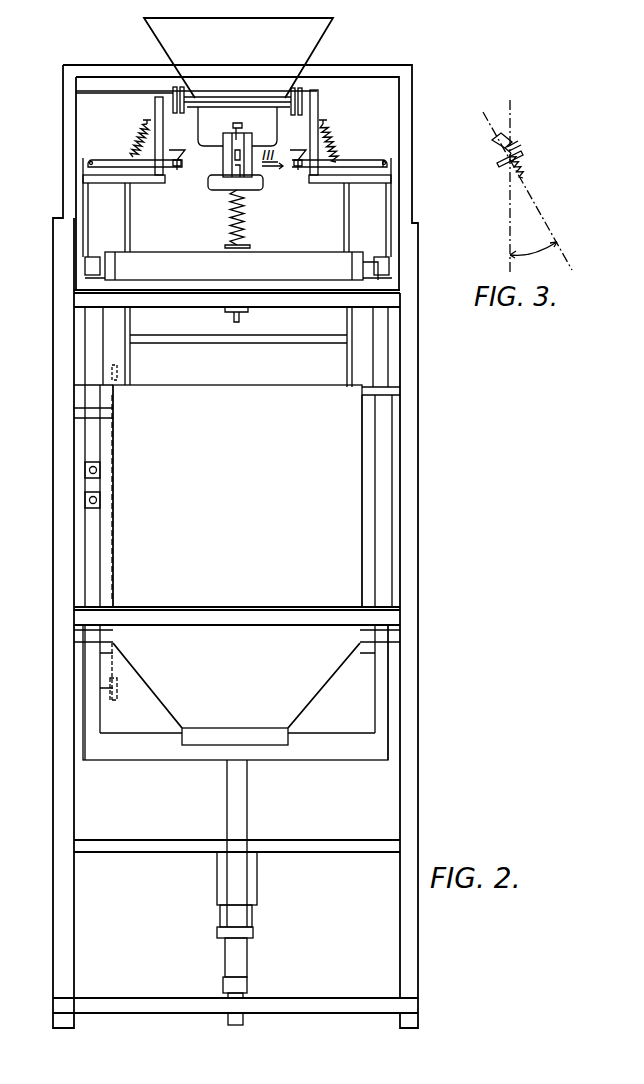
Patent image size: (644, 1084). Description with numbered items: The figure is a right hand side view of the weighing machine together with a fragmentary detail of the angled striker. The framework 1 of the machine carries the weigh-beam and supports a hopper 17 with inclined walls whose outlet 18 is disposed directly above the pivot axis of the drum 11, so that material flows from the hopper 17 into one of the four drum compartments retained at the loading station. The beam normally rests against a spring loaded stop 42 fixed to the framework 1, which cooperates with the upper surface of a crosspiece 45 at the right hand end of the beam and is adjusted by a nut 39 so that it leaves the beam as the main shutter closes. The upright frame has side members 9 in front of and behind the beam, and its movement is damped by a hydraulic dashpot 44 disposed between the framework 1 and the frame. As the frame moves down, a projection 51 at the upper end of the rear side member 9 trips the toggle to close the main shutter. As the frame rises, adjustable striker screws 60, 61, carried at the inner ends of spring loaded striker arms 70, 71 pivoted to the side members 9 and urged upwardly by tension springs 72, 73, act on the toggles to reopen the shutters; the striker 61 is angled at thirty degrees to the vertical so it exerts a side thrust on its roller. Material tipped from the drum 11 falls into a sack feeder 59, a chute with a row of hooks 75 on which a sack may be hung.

In FIG. 2, the framework 1 is at (407, 790).
In FIG. 2, the side members 9 is at (92, 517).
In FIG. 2, the drum 11 is at (243, 373).
In FIG. 2, the hopper 17 is at (238, 49).
In FIG. 2, the outlet 18 is at (262, 100).
In FIG. 2, the nut 39 is at (232, 173).
In FIG. 2, the spring loaded stop 42 is at (228, 242).
In FIG. 2, the hydraulic dashpot 44 is at (250, 885).
In FIG. 2, the crosspiece 45 is at (293, 260).
In FIG. 2, the projection 51 is at (310, 90).
In FIG. 2, the sack feeder 59 is at (243, 506).
In FIG. 2, the striker screw 60 is at (177, 150).
In FIG. 2, the striker screw 61 is at (298, 150).
In FIG. 3, the striker screw 61 is at (510, 140).
In FIG. 2, the striker arm 70 is at (110, 160).
In FIG. 2, the striker arm 71 is at (347, 160).
In FIG. 3, the striker arm 71 is at (498, 167).
In FIG. 2, the tension spring 72 is at (138, 137).
In FIG. 2, the tension spring 73 is at (333, 140).
In FIG. 2, the hooks 75 is at (290, 733).